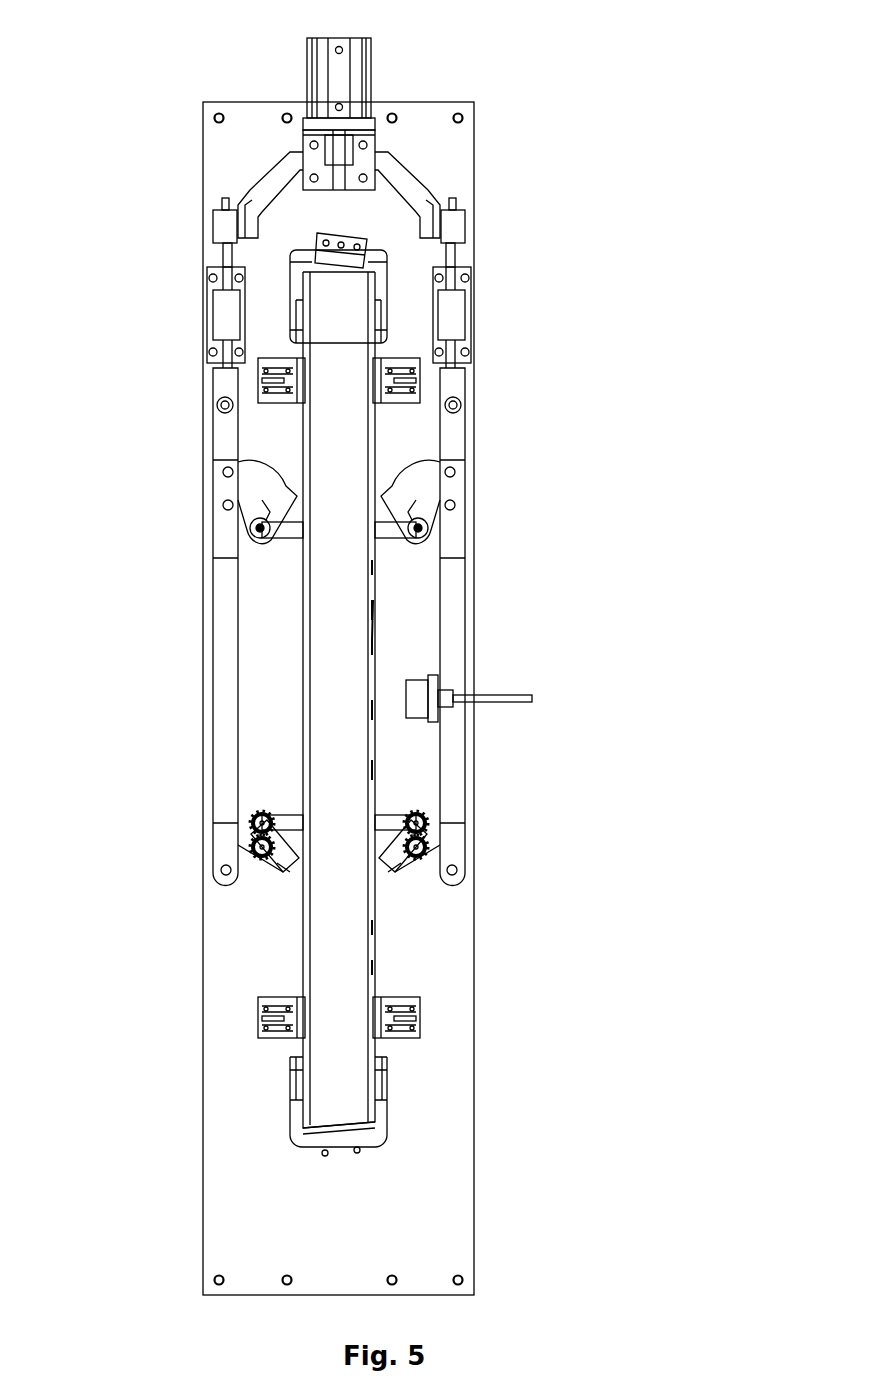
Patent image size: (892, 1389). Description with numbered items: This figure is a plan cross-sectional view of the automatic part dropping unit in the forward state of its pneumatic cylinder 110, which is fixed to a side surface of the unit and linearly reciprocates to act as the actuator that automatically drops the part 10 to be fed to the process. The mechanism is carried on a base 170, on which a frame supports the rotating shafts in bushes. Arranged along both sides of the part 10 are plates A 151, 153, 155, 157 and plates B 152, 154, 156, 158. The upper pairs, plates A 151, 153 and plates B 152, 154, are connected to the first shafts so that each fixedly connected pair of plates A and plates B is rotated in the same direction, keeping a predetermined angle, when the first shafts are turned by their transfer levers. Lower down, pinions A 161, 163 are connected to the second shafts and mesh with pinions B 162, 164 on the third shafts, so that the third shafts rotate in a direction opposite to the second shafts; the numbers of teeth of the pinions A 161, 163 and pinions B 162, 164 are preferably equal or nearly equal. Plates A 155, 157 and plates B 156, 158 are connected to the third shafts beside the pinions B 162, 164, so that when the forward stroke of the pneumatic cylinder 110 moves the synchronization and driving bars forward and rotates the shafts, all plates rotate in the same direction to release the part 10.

The part 10 is at (370, 1108).
The pneumatic cylinder 110 is at (371, 68).
The plate A 151 is at (425, 458).
The plate B 152 is at (398, 538).
The plate A 153 is at (245, 462).
The plate B 154 is at (288, 536).
The plate A 155 is at (402, 872).
The plate B 156 is at (389, 813).
The plate A 157 is at (276, 870).
The plate B 158 is at (295, 812).
The pinion A 161 is at (432, 845).
The pinion B 162 is at (430, 818).
The pinion A 163 is at (250, 845).
The pinion B 164 is at (252, 816).
The base 170 is at (474, 158).